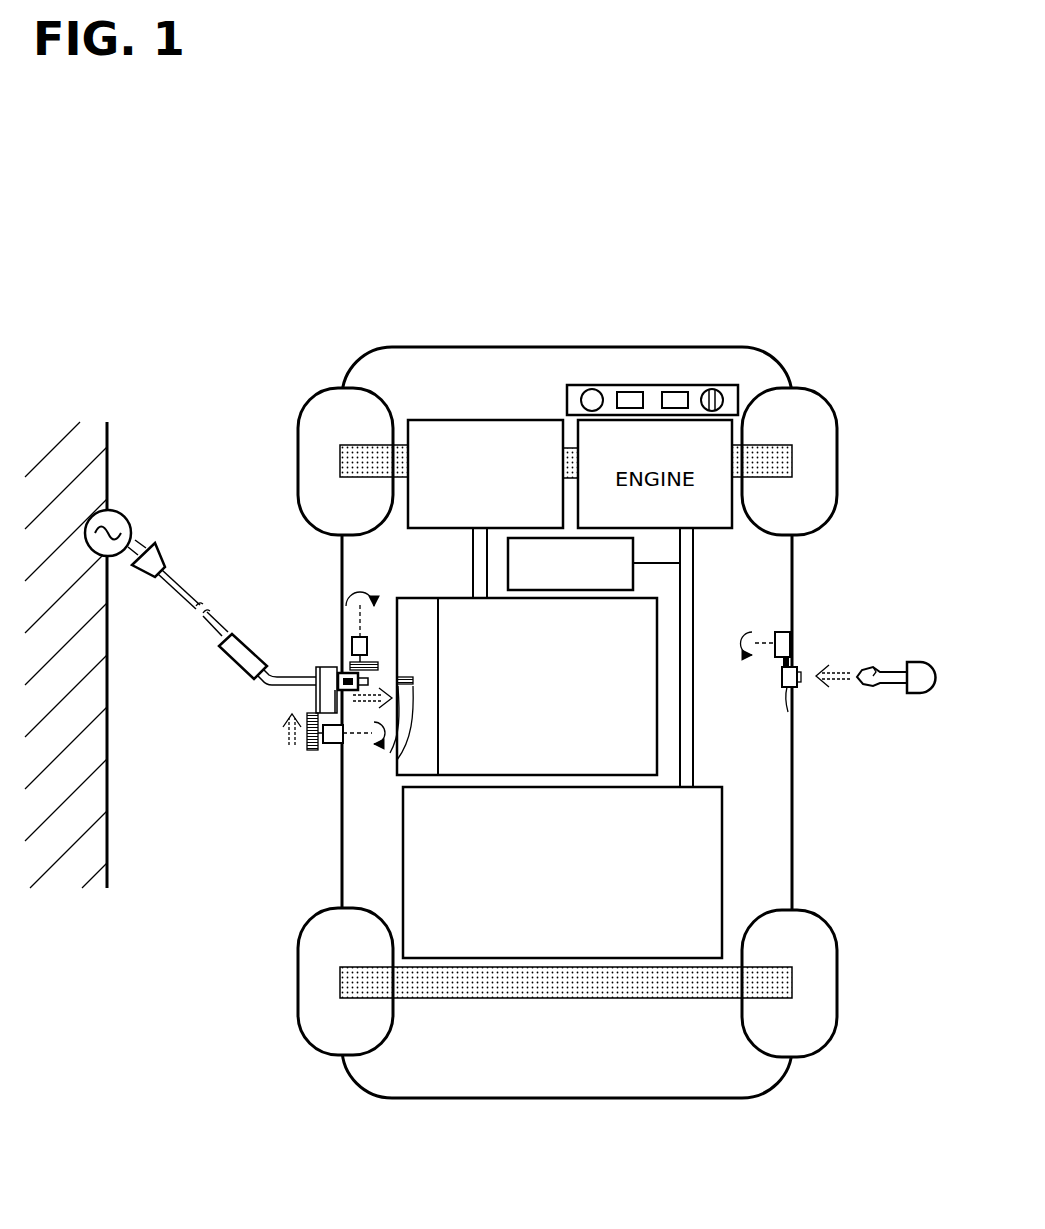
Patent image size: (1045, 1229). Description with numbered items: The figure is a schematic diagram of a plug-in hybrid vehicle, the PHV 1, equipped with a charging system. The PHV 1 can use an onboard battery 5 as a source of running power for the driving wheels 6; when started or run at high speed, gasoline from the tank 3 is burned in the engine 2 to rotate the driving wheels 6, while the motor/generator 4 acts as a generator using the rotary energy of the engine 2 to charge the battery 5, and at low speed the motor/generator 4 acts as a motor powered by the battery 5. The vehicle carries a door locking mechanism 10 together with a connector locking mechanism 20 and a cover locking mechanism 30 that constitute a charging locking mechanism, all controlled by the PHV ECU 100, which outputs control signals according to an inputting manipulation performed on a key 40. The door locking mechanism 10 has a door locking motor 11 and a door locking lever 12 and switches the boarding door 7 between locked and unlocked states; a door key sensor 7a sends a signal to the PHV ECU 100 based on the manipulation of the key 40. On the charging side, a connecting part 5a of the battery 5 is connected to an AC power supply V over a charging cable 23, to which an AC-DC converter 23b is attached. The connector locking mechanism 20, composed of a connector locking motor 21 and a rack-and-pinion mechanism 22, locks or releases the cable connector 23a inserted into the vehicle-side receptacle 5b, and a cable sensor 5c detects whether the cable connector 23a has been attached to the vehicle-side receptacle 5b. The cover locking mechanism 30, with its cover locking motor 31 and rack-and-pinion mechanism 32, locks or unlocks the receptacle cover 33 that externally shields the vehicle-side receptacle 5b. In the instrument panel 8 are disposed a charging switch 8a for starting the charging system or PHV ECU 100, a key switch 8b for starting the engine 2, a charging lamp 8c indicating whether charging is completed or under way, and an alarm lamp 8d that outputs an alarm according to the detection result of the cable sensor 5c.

The plug-in hybrid vehicle (PHV) 1 is at (826, 372).
The engine 2 is at (717, 530).
The tank 3 is at (722, 860).
The motor/generator 4 is at (502, 420).
The battery 5 is at (657, 730).
The connecting part 5a is at (403, 777).
The vehicle-side receptacle 5b is at (398, 700).
The cable sensor 5c is at (413, 705).
The driving wheels 6 is at (322, 420).
The door 7 is at (793, 610).
The door key sensor 7a is at (797, 683).
The instrument panel 8 is at (682, 359).
The charging switch 8a is at (587, 391).
The key switch 8b is at (712, 388).
The charging lamp 8c is at (626, 390).
The alarm lamp 8d is at (675, 388).
The door locking mechanism 10 is at (897, 648).
The door locking motor 11 is at (792, 634).
The door locking lever 12 is at (792, 712).
The connector locking mechanism 20 is at (260, 616).
The connector locking motor 21 is at (353, 662).
The rack-and-pinion mechanism 22 is at (348, 672).
The charging cable 23 is at (233, 627).
The cable connector 23a is at (337, 674).
The AC-DC converter 23b is at (237, 664).
The cover locking mechanism 30 is at (283, 780).
The cover locking motor 31 is at (337, 743).
The rack-and-pinion mechanism 32 is at (307, 750).
The receptacle cover 33 is at (315, 692).
The key 40 is at (925, 694).
The PHV electronic control unit (ECU) 100 is at (693, 565).
The AC power supply V is at (113, 512).